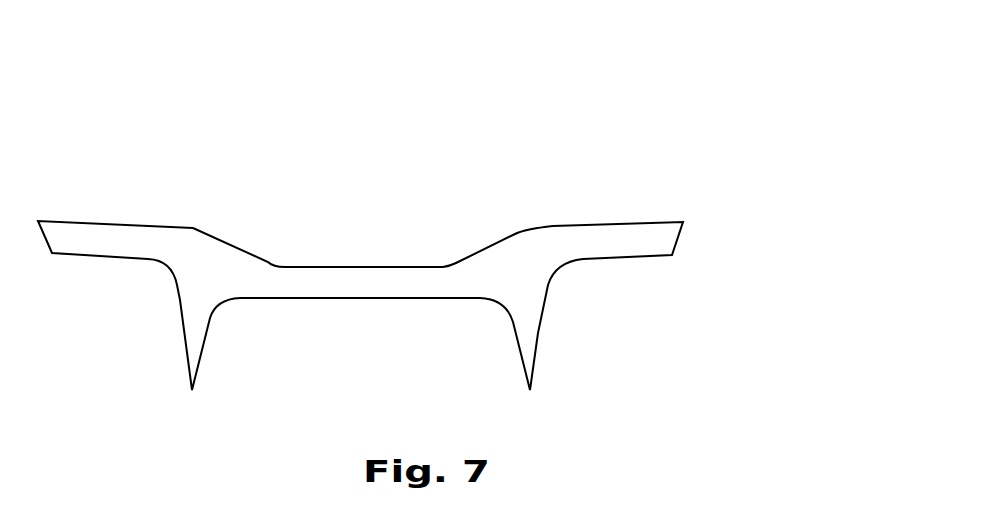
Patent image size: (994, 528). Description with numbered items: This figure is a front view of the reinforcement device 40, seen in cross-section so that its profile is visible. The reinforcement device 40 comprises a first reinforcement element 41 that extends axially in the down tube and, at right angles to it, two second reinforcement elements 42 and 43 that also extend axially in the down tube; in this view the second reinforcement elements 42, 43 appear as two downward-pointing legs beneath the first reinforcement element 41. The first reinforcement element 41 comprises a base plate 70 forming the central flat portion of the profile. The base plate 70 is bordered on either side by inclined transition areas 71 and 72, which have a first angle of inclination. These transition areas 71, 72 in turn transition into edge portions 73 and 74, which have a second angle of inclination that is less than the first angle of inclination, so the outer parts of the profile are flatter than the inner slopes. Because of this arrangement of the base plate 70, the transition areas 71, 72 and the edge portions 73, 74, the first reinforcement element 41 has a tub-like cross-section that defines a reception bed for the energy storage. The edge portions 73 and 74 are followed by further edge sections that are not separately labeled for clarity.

The reinforcement device 40 is at (740, 118).
The first reinforcement element 41 is at (356, 228).
The second reinforcement element 42 is at (525, 345).
The second reinforcement element 43 is at (195, 346).
The base plate 70 is at (355, 280).
The transition area 71 is at (507, 258).
The transition area 72 is at (213, 260).
The edge portion 73 is at (655, 235).
The edge portion 74 is at (79, 232).